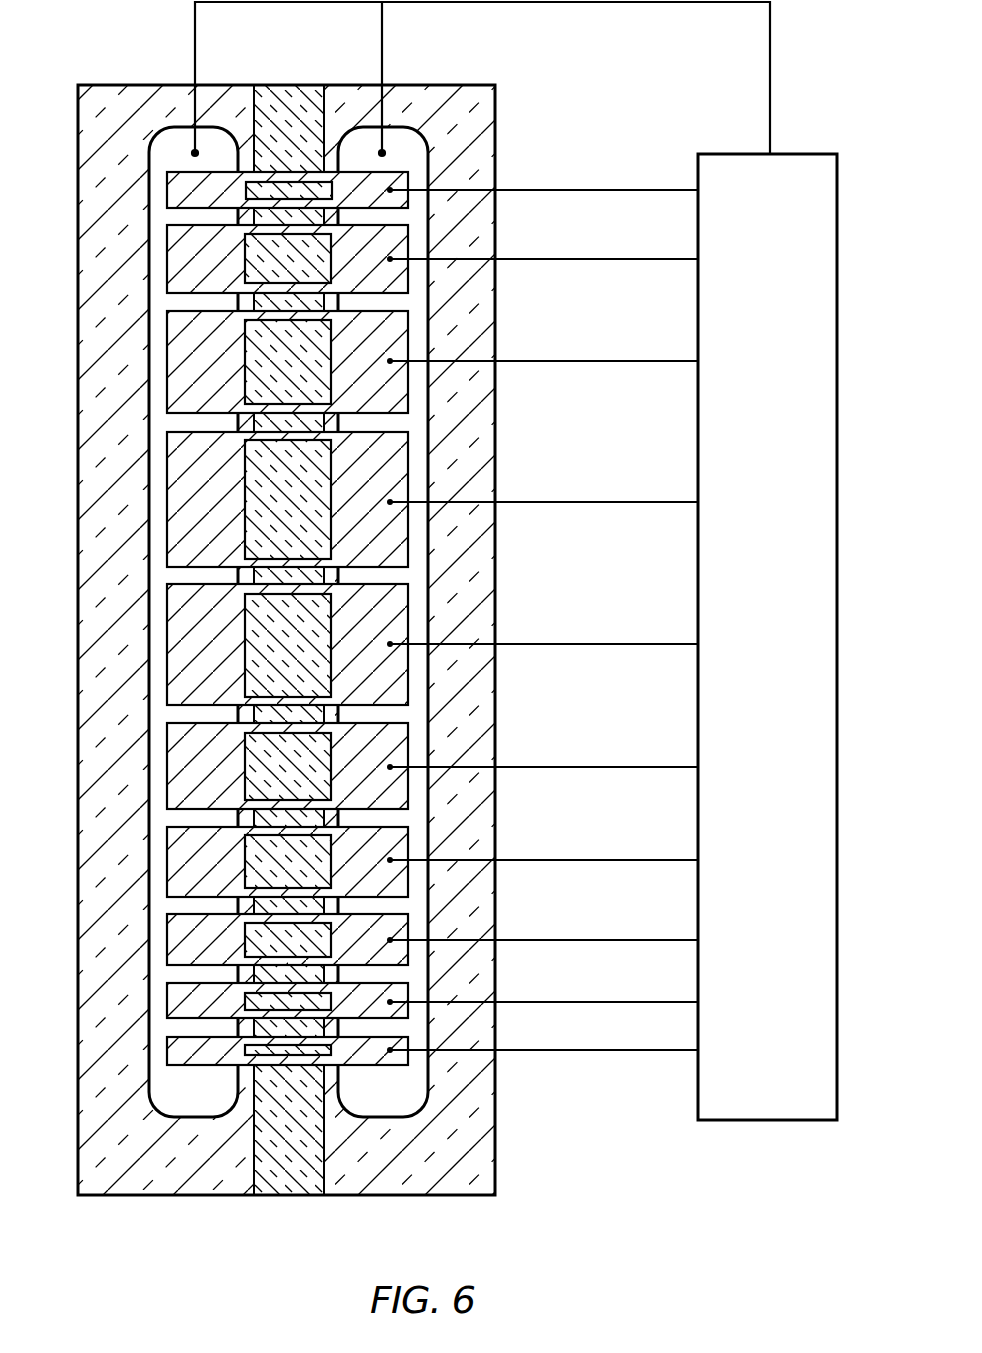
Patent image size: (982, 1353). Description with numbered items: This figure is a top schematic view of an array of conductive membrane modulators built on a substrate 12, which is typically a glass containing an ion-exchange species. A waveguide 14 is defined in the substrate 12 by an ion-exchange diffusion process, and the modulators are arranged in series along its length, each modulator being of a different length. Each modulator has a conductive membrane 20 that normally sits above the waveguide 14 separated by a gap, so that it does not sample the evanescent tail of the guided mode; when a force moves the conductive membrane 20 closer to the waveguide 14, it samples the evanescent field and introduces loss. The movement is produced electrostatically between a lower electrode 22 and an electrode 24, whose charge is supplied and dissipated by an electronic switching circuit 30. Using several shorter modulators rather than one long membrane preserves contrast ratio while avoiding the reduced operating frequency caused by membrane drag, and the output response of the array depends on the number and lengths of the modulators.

The substrate 12 is at (418, 1165).
The waveguide 14 is at (272, 1158).
The conductive membrane 20 is at (268, 273).
The lower electrode 22 is at (160, 148).
The electrode 24 is at (180, 190).
The electronic switching circuit 30 is at (741, 628).